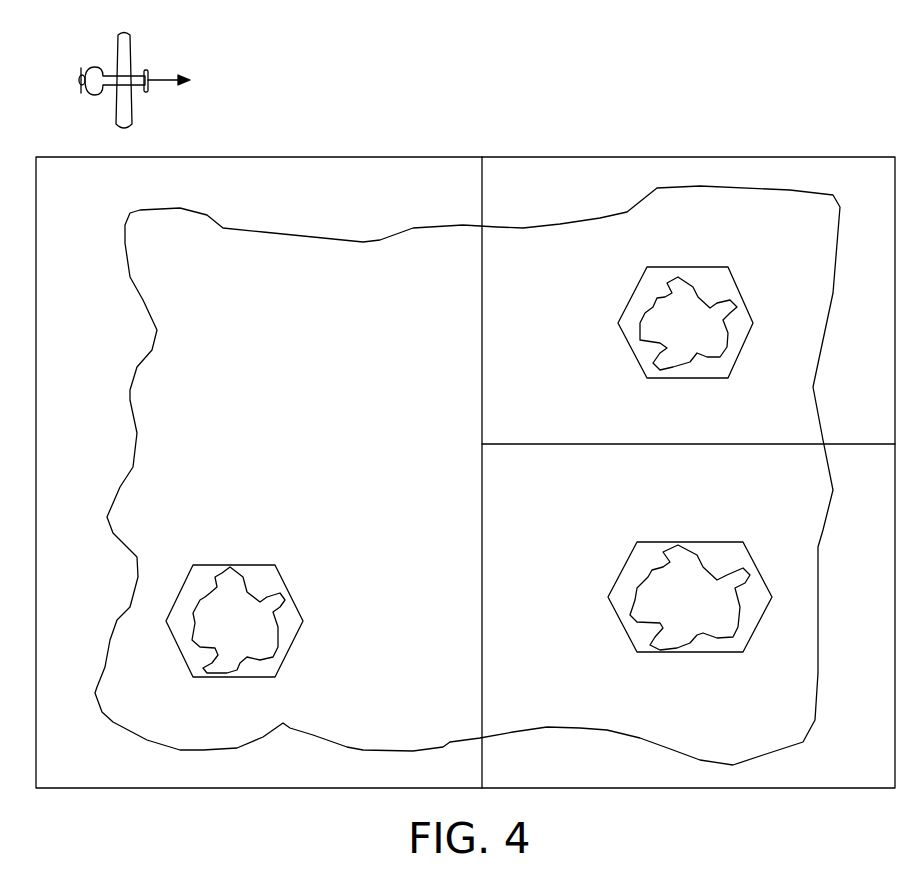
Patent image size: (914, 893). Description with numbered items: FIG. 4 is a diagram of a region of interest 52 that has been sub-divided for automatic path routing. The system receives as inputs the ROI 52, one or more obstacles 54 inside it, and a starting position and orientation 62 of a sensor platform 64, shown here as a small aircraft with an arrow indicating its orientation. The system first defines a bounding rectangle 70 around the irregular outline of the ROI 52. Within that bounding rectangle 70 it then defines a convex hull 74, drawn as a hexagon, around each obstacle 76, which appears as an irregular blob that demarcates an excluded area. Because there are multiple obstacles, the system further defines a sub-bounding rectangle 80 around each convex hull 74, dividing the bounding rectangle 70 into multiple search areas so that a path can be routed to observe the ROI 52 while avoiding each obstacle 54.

The region of interest 52 is at (127, 222).
The obstacle 54 is at (268, 646).
The starting position and orientation 62 is at (158, 84).
The sensor platform 64 is at (117, 47).
The bounding rectangle 70 is at (346, 148).
The convex hull 74 is at (626, 312).
The obstacle 76 is at (618, 348).
The sub-bounding rectangle 80 is at (668, 157).